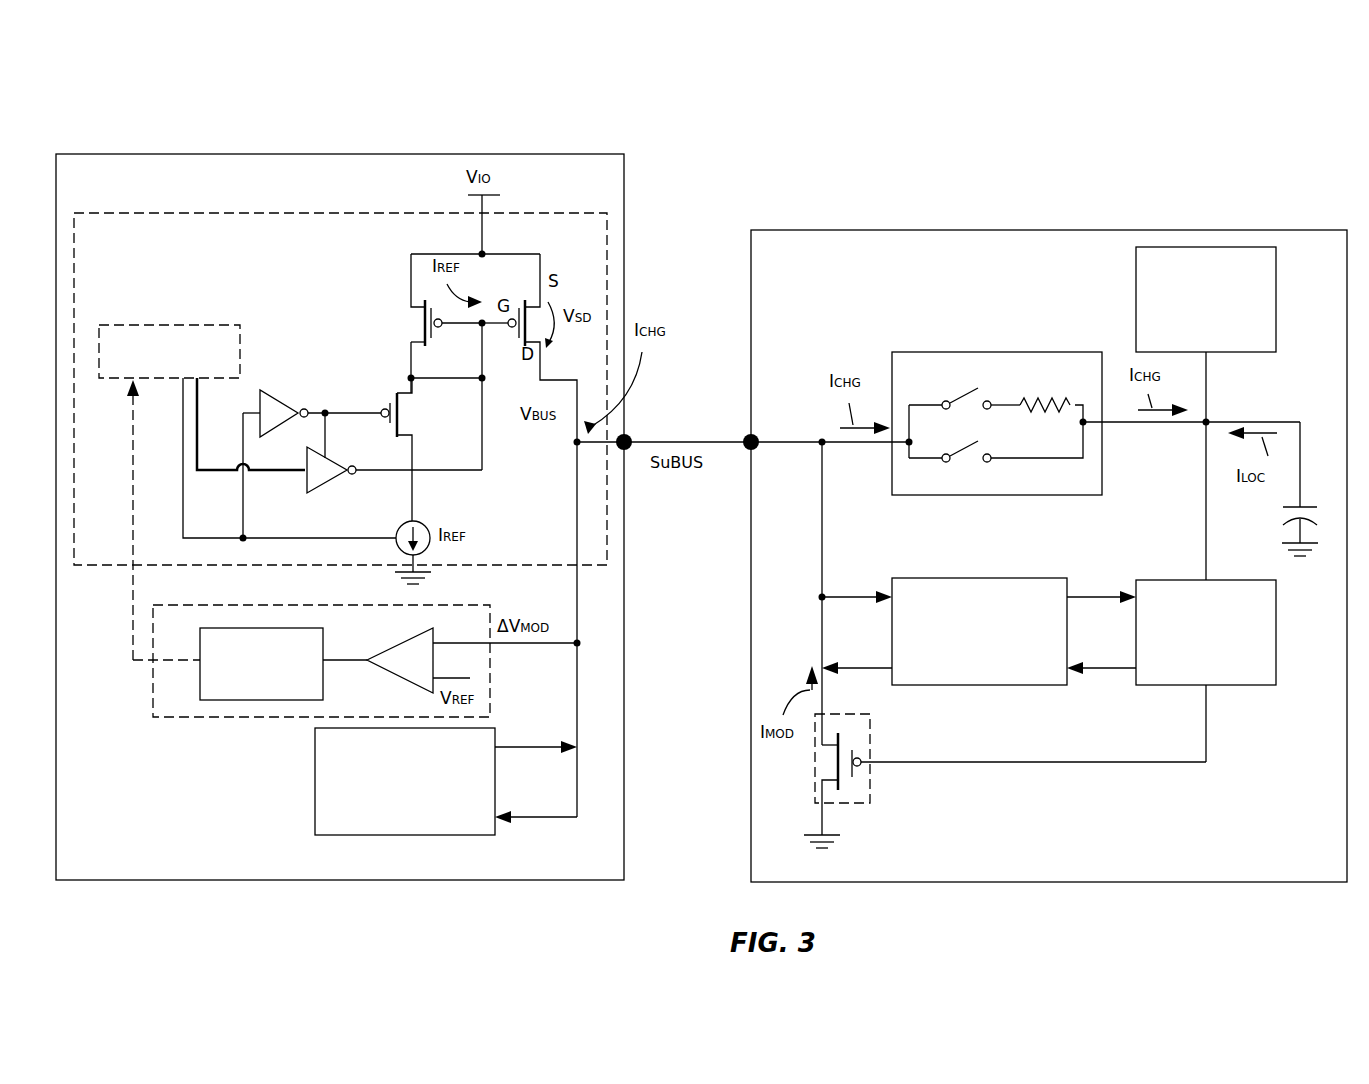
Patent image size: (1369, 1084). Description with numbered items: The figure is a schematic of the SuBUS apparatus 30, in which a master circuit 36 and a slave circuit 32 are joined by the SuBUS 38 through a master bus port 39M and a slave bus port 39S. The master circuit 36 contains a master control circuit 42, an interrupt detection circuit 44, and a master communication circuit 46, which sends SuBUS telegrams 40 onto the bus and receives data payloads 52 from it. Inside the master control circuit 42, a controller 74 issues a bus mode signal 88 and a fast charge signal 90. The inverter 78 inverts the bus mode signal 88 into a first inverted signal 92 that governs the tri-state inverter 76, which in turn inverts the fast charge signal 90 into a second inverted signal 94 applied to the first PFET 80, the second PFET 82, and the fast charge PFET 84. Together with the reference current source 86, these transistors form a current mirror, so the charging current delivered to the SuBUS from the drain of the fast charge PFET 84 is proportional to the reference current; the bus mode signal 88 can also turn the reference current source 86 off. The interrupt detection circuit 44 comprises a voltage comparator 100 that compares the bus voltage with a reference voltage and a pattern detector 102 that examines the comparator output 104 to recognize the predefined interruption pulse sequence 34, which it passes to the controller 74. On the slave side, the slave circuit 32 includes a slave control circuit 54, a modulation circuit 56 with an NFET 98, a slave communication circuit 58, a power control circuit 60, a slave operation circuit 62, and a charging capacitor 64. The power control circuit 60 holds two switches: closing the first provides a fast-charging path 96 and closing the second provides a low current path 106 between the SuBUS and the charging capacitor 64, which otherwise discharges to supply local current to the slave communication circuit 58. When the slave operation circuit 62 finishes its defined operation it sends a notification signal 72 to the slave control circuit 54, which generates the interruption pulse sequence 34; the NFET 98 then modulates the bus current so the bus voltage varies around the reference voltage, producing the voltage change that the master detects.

The SuBUS apparatus 30 is at (240, 85).
The slave circuit 32 is at (1049, 556).
The predefined interruption pulse sequence 34 is at (1108, 776).
The master circuit 36 is at (340, 517).
The SuBUS 38 is at (679, 440).
The master bus port 39M is at (626, 448).
The slave bus port 39S is at (754, 448).
The SuBUS telegram 40 is at (726, 434).
The master control circuit 42 is at (340, 389).
The interrupt detection circuit 44 is at (222, 718).
The master communication circuit 46 is at (405, 781).
The data payload 52 is at (722, 460).
The slave control circuit 54 is at (1206, 632).
The modulation circuit 56 is at (870, 782).
The slave communication circuit 58 is at (979, 631).
The power control circuit 60 is at (1012, 352).
The slave operation circuit 62 is at (1206, 299).
The charging capacitor 64 is at (1306, 506).
The notification signal 72 is at (1212, 508).
The controller 74 is at (169, 351).
The tri-state inverter 76 is at (325, 484).
The inverter 78 is at (278, 398).
The first p-type field-effect transistor 80 is at (405, 413).
The second PFET 82 is at (420, 318).
The fast charge PFET 84 is at (512, 332).
The reference current source 86 is at (430, 523).
The bus mode signal 88 is at (223, 550).
The fast charge signal 90 is at (223, 482).
The first inverted signal 92 is at (352, 424).
The second inverted signal 94 is at (454, 478).
The fast-charging path 96 is at (1026, 463).
The n-type field-effect transistor 98 is at (828, 760).
The voltage comparator 100 is at (405, 675).
The pattern detector 102 is at (261, 664).
The output 104 is at (349, 674).
The low current path 106 is at (1028, 404).